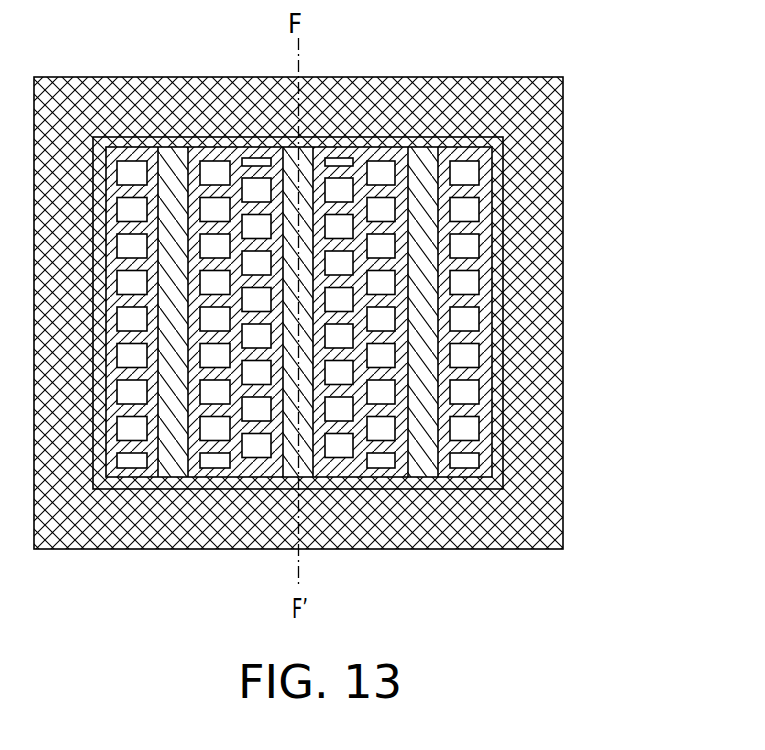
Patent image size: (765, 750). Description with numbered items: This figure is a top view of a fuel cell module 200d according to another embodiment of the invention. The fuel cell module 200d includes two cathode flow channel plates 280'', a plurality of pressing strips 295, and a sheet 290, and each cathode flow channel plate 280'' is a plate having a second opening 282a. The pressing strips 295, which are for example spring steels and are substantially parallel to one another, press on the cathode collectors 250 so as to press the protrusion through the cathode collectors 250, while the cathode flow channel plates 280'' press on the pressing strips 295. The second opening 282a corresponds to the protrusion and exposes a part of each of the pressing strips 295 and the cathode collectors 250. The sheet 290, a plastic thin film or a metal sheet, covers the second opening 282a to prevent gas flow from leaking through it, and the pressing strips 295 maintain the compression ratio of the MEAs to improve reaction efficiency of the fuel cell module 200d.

The second opening 282a is at (106, 174).
The cathode collector 250 is at (358, 148).
The pressing strip 295 is at (427, 222).
The sheet 290 is at (513, 270).
The cathode flow channel plate 280'' is at (340, 313).
The fuel cell module 200d is at (632, 615).